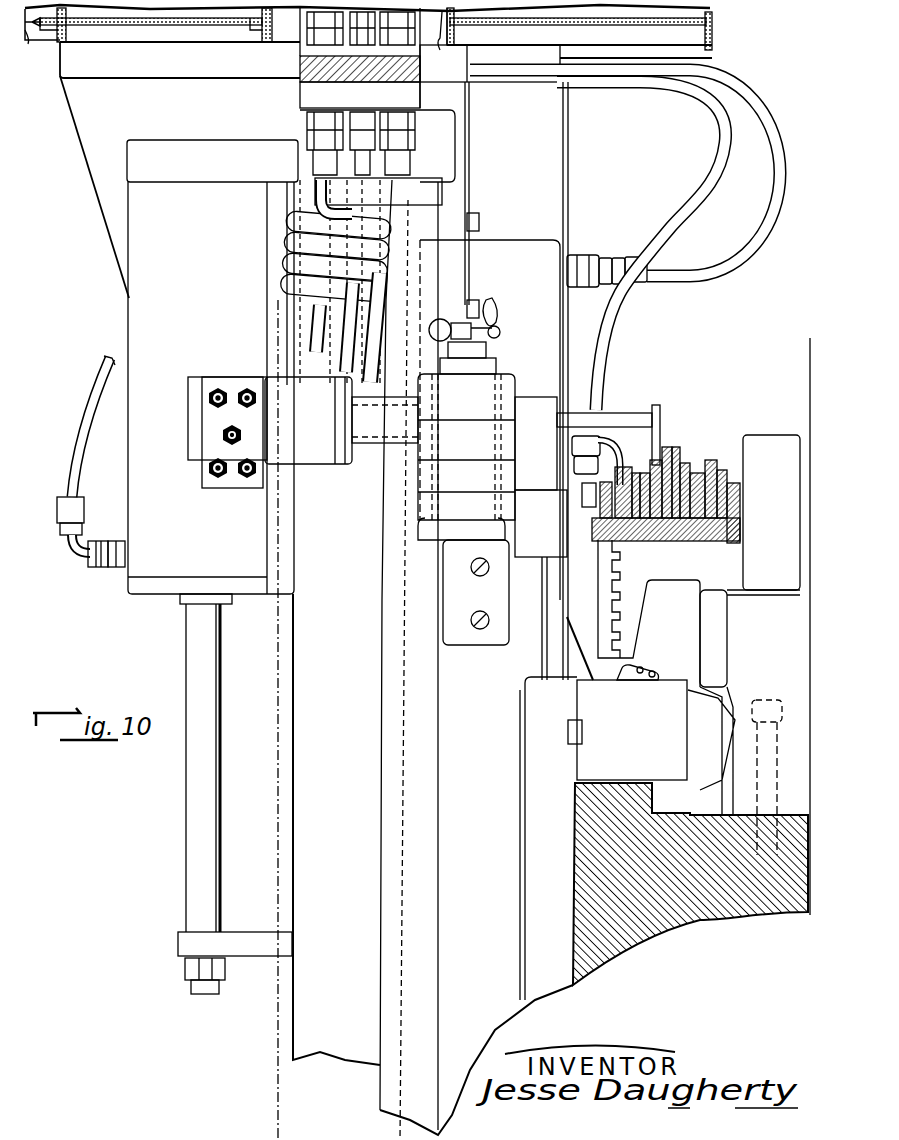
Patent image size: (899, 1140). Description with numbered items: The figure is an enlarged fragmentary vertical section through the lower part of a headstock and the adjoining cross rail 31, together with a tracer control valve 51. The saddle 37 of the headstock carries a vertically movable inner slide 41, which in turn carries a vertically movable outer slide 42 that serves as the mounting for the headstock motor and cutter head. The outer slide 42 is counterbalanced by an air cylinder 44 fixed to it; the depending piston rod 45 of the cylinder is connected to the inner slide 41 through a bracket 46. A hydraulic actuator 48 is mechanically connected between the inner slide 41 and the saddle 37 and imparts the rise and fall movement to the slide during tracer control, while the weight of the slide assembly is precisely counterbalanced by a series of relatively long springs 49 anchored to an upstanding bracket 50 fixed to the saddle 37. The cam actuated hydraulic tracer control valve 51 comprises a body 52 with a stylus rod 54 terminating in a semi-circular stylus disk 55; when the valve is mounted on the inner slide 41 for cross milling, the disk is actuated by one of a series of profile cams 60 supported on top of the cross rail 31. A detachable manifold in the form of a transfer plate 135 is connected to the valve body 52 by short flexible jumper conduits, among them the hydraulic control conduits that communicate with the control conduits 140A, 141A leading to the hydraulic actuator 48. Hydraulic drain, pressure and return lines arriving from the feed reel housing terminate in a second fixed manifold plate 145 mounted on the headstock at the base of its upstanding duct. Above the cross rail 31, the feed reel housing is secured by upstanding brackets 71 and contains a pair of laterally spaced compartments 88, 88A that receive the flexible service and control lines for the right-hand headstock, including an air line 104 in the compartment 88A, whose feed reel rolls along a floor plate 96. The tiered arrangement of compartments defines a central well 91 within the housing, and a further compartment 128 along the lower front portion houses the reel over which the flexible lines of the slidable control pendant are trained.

The compartment 128 is at (42, 36).
The compartment 88 is at (152, 12).
The floor plate 96 is at (192, 20).
The compartment 88A is at (712, 22).
The plate 145 is at (300, 66).
The transfer plate 135 is at (300, 95).
The central well 91 is at (490, 45).
The upstanding brackets 71 is at (95, 155).
The upstanding bracket 50 is at (462, 206).
The hydraulic actuator 48 is at (513, 252).
The springs 49 is at (286, 294).
The control conduit 140A is at (752, 242).
The control conduit 141A is at (632, 290).
The air cylinder 44 is at (146, 312).
The air line 104 is at (92, 390).
The tracer control valve 51 is at (524, 376).
The stylus rod 54 is at (628, 418).
The stylus disk 55 is at (661, 410).
The profile cams 60 is at (680, 450).
The body 52 is at (312, 460).
The inner slide 41 is at (470, 645).
The piston rod 45 is at (193, 660).
The bracket 46 is at (180, 940).
The outer slide 42 is at (305, 1013).
The cross rail 31 is at (645, 920).
The saddle 37 is at (553, 985).